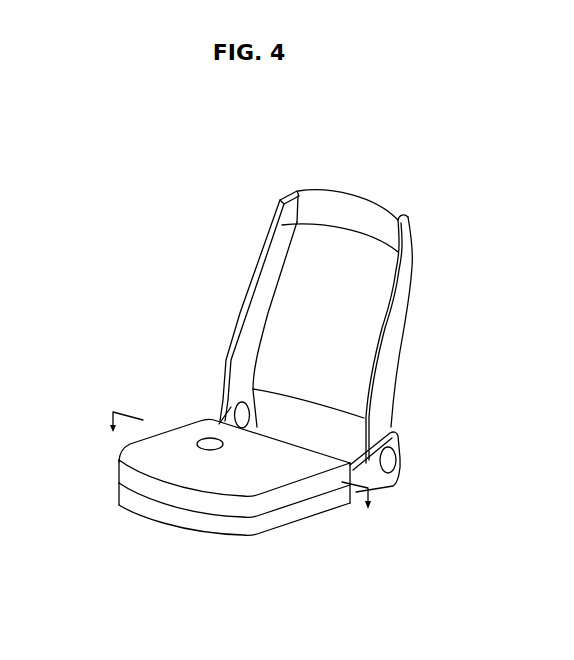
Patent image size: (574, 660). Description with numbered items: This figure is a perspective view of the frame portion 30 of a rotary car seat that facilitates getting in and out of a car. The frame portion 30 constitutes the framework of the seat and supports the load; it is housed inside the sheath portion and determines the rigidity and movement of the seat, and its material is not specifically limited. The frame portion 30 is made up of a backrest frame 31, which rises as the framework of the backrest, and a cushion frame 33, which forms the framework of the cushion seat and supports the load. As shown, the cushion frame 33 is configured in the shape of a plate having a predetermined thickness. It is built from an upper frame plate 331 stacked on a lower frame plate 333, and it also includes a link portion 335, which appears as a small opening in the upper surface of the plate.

The frame portion 30 is at (206, 166).
The backrest frame 31 is at (275, 261).
The cushion frame 33 is at (108, 595).
The upper frame plate 331 is at (194, 495).
The lower frame plate 333 is at (260, 522).
The link portion 335 is at (210, 443).